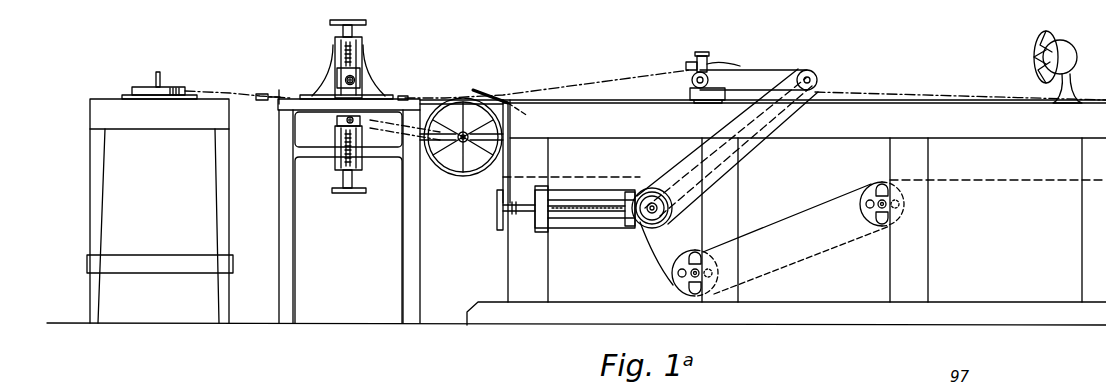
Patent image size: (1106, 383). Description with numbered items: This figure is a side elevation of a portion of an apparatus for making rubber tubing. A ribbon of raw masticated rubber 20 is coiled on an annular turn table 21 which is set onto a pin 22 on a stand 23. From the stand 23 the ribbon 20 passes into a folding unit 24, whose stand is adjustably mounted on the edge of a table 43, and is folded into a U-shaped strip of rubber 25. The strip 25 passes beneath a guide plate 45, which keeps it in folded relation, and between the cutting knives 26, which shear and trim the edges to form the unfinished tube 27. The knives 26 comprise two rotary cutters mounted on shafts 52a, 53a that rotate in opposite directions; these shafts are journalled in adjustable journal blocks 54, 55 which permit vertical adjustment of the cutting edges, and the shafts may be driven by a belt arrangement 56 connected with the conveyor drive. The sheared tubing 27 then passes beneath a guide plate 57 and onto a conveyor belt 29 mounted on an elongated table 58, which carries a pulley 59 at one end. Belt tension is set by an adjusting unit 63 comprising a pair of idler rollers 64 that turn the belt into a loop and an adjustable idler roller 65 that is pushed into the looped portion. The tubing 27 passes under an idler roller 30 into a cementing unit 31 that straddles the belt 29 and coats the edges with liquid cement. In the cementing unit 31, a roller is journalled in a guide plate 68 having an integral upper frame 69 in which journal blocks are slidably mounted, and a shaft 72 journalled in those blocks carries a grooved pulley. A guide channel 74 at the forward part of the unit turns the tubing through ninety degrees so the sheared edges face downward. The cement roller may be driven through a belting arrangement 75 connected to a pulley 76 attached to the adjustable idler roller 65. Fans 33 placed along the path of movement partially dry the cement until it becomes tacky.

The ribbon of raw masticated rubber 20 is at (230, 91).
The turn table 21 is at (130, 88).
The pin 22 is at (162, 72).
The stand 23 is at (95, 188).
The folding unit 24 is at (262, 103).
The U-shaped strip of rubber 25 is at (342, 81).
The cutting knives 26 is at (368, 86).
The unfinished tube 27 is at (432, 100).
The conveyor belt 29 is at (572, 177).
The idler roller 30 is at (476, 90).
The cementing unit 31 is at (708, 60).
The fan 33 is at (1060, 48).
The table 43 is at (290, 250).
The guide plate 45 is at (280, 90).
The shaft 52a is at (356, 78).
The shaft 53a is at (366, 124).
The journal block 54 is at (340, 78).
The journal block 55 is at (345, 122).
The belt arrangement 56 is at (380, 130).
The guide plate 57 is at (404, 96).
The elongated table 58 is at (520, 272).
The pulley 59 is at (478, 158).
The adjusting unit 63 is at (592, 230).
The idler roller 64 is at (688, 283).
The adjustable idler roller 65 is at (650, 232).
The guide plate 68 is at (690, 94).
The upper frame 69 is at (712, 66).
The shaft 72 is at (692, 78).
The guide channel 74 is at (691, 62).
The belting arrangement 75 is at (752, 132).
The pulley 76 is at (662, 208).